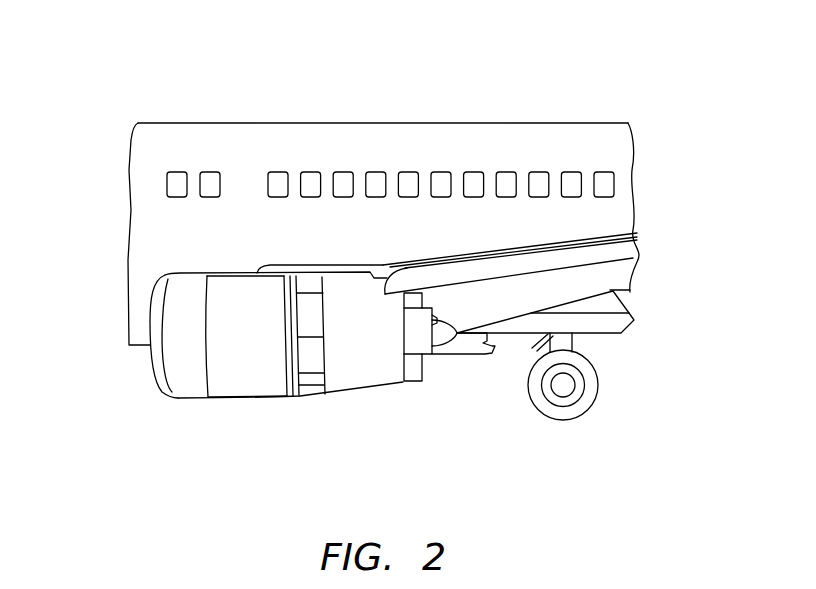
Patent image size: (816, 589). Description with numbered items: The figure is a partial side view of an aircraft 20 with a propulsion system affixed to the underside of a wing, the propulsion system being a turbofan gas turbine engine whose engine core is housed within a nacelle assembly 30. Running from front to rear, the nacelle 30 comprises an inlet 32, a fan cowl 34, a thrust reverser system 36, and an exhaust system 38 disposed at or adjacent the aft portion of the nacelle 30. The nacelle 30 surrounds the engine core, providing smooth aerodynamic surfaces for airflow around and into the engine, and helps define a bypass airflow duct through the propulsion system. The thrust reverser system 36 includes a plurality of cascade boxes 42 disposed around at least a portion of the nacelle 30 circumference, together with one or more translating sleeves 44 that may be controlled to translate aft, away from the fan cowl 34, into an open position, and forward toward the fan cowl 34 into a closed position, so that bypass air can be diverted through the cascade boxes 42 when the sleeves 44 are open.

The aircraft 20 is at (203, 103).
The nacelle assembly 30 is at (286, 395).
The inlet 32 is at (150, 362).
The fan cowl 34 is at (232, 382).
The thrust reverser system 36 is at (320, 397).
The exhaust system 38 is at (437, 377).
The cascade boxes 42 is at (316, 393).
The translating sleeves 44 is at (392, 375).